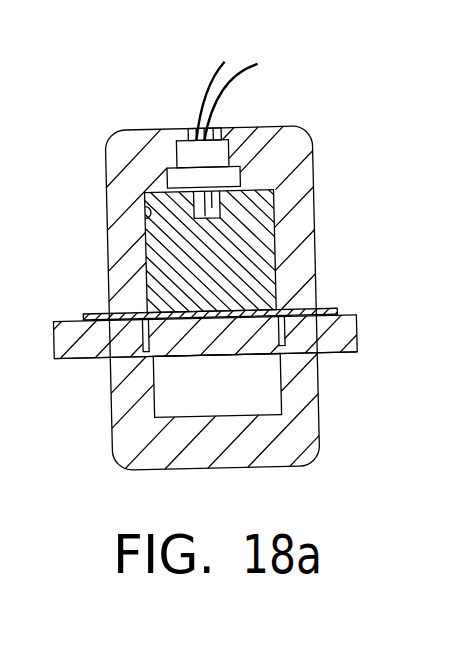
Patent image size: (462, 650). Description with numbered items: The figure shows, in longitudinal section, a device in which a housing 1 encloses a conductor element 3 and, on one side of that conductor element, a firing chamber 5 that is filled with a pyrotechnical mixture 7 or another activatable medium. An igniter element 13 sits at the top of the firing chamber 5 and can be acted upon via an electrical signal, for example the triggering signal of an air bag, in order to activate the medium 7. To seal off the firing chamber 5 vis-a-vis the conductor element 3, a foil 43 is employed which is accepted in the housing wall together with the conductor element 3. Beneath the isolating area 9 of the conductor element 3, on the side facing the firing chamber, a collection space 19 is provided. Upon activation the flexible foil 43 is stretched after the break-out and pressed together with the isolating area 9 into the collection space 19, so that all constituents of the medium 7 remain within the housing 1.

The housing 1 is at (292, 153).
The conductor element 3 is at (343, 335).
The firing chamber 5 is at (153, 220).
The pyrotechnical mixture 7 is at (250, 255).
The isolating area 9 is at (173, 348).
The igniter element 13 is at (222, 147).
The collection space 19 is at (227, 399).
The foil 43 is at (325, 310).